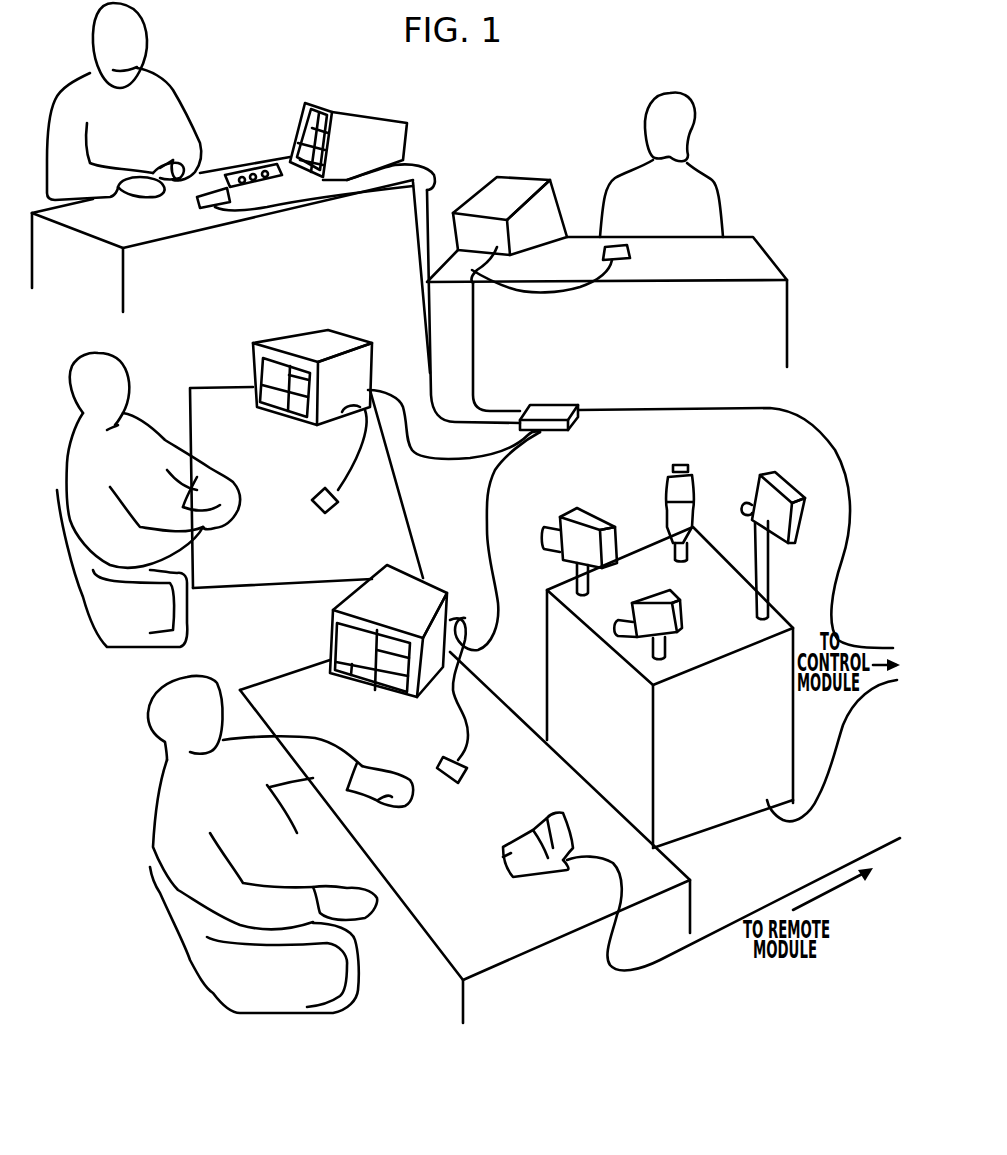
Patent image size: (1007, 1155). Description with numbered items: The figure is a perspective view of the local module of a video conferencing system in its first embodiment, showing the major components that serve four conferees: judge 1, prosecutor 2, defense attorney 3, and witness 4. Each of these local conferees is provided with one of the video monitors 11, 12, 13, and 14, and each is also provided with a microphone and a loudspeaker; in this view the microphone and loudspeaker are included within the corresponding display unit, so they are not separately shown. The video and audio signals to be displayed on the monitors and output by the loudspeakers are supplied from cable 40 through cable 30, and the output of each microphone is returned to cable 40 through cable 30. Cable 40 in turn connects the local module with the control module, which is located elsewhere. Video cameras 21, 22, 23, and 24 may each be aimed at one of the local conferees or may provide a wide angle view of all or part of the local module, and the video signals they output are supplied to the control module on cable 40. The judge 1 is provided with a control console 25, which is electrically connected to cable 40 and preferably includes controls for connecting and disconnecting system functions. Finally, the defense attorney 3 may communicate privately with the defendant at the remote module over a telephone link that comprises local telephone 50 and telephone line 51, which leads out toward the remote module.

The judge 1 is at (165, 67).
The prosecutor 2 is at (143, 420).
The defense attorney 3 is at (157, 803).
The witness 4 is at (717, 181).
The video monitor 11 is at (390, 113).
The video monitor 12 is at (313, 427).
The video monitor 13 is at (410, 697).
The video monitor 14 is at (553, 245).
The video camera 21 is at (790, 543).
The video camera 22 is at (607, 523).
The video camera 23 is at (680, 615).
The video camera 24 is at (693, 487).
The control console 25 is at (249, 170).
The cable 30 is at (821, 423).
The cable 40 is at (840, 737).
The local telephone 50 is at (547, 875).
The telephone line 51 is at (673, 953).